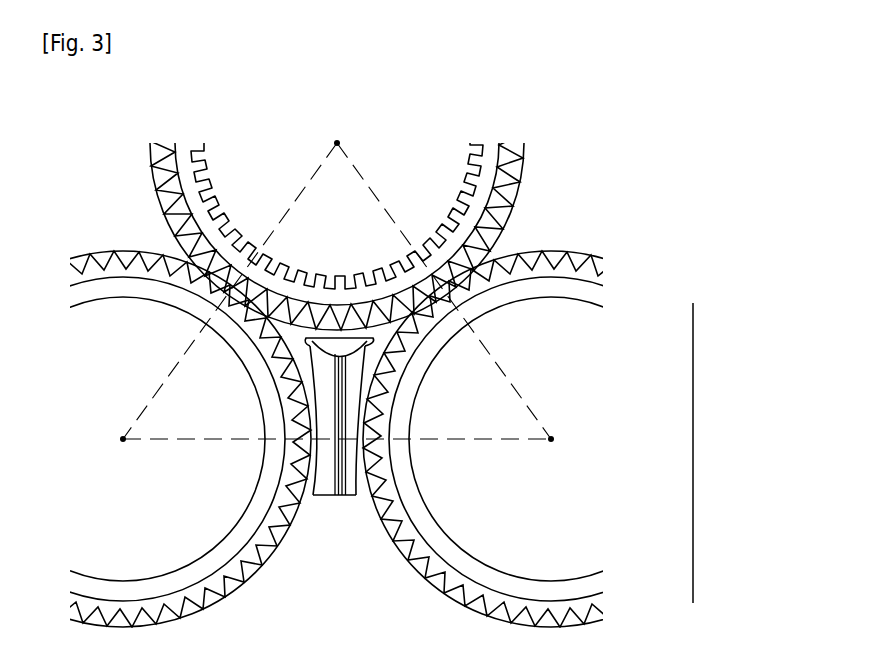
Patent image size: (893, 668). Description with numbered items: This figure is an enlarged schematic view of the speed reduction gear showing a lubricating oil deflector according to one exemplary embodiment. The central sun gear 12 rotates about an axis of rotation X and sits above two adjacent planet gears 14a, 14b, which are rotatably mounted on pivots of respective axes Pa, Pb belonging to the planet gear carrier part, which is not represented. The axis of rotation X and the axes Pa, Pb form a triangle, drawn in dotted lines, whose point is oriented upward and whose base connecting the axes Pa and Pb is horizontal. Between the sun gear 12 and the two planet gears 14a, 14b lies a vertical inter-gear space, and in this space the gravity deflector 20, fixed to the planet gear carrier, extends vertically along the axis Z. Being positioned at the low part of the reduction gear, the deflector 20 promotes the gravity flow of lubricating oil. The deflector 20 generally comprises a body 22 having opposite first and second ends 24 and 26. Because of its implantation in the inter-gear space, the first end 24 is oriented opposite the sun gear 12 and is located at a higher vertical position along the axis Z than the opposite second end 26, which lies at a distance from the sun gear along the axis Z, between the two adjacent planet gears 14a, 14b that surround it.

The central sun gear 12 is at (527, 167).
The planet gear 14a is at (105, 252).
The planet gear 14b is at (595, 255).
The lubricating oil deflector 20 is at (287, 406).
The body 22 is at (315, 404).
The first end 24 is at (342, 338).
The second end 26 is at (350, 503).
The axis of rotation X is at (340, 140).
The axis Pa is at (120, 442).
The axis Pb is at (548, 442).
The axis Z is at (693, 453).